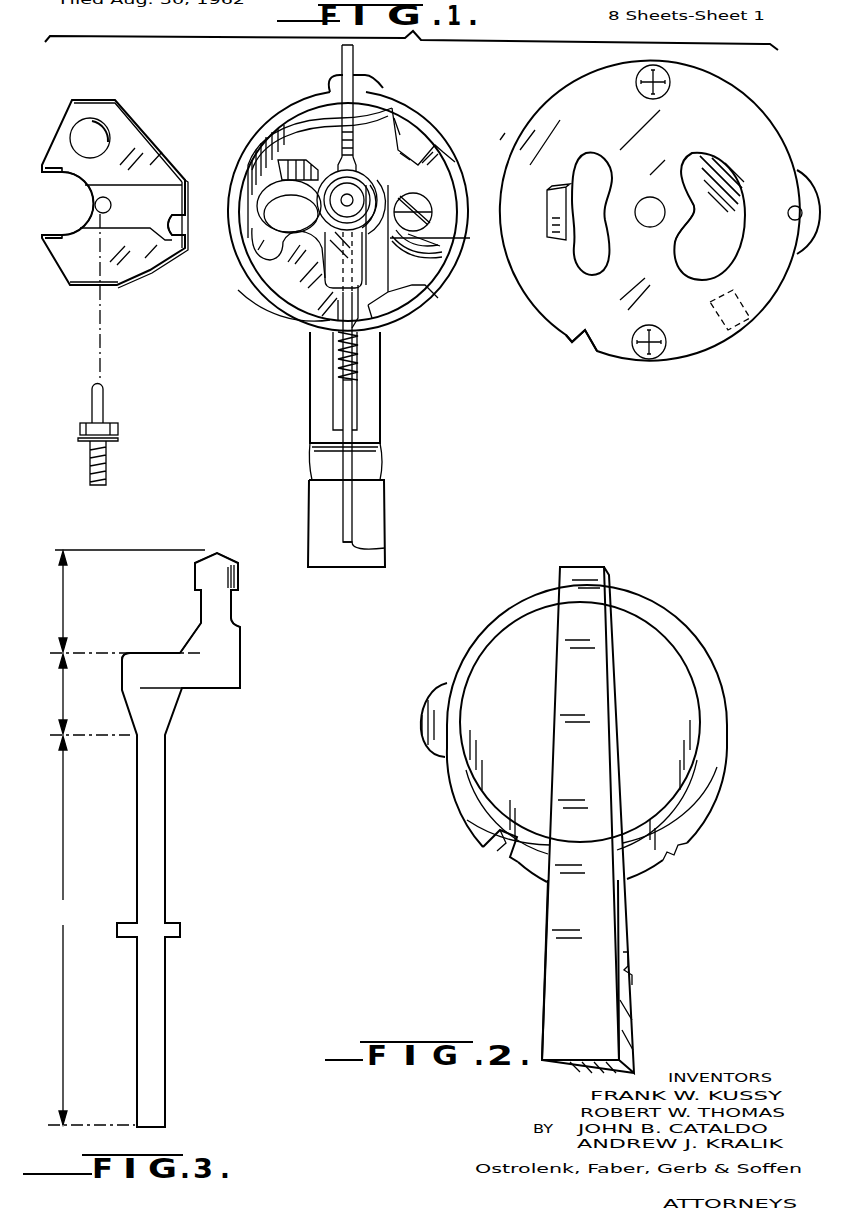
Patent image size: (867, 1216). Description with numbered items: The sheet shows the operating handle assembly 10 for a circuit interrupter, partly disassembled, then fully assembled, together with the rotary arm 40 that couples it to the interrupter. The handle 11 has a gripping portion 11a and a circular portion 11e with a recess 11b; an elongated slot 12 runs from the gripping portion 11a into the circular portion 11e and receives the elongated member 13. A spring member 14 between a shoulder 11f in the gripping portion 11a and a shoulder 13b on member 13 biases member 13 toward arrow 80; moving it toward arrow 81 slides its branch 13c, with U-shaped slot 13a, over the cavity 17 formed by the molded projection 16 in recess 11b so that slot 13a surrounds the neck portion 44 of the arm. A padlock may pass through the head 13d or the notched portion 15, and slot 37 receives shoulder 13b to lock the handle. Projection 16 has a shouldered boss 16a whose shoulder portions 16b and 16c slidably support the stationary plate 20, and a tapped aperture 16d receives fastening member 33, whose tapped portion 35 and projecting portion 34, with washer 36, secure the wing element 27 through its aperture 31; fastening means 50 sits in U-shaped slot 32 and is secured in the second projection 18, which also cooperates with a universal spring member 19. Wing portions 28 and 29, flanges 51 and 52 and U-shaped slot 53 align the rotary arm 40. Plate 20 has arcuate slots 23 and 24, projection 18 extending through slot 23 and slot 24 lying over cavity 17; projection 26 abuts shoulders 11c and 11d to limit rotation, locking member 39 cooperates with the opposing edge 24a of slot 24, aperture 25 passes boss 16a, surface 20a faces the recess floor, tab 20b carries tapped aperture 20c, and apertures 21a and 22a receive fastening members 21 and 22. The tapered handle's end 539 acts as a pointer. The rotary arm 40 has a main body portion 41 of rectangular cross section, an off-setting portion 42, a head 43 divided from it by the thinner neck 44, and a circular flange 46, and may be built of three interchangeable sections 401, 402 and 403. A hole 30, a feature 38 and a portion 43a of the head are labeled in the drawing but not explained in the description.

In FIG. 1, the handle assembly 10 is at (438, 381).
In FIG. 1, the handle 11 is at (425, 86).
In FIG. 2, the handle 11 is at (740, 615).
In FIG. 1, the gripping portion 11a is at (318, 415).
In FIG. 2, the gripping portion 11a is at (548, 958).
In FIG. 1, the recess 11b is at (270, 128).
In FIG. 1, the shoulder 11c is at (410, 150).
In FIG. 1, the shoulder 11d is at (420, 280).
In FIG. 1, the circular portion 11e is at (296, 90).
In FIG. 2, the circular portion 11e is at (640, 606).
In FIG. 1, the shoulder 11f is at (375, 326).
In FIG. 1, the elongated slot 12 is at (355, 545).
In FIG. 1, the elongated member 13 is at (352, 512).
In FIG. 1, the U-shaped slot 13a is at (275, 262).
In FIG. 1, the shoulder 13b is at (343, 383).
In FIG. 1, the extending branch 13c is at (300, 295).
In FIG. 1, the head 13d is at (355, 50).
In FIG. 1, the spring member 14 is at (338, 358).
In FIG. 1, the notched portion 15 is at (376, 458).
In FIG. 2, the notched portion 15 is at (632, 962).
In FIG. 1, the molded projection 16 is at (252, 172).
In FIG. 1, the shouldered boss 16a is at (328, 214).
In FIG. 1, the shoulder portion 16b is at (352, 232).
In FIG. 1, the shoulder portion 16c is at (378, 192).
In FIG. 1, the tapped aperture 16d is at (332, 165).
In FIG. 1, the cavity 17 is at (265, 205).
In FIG. 1, the second projection 18 is at (455, 240).
In FIG. 1, the universal spring member 19 is at (432, 232).
In FIG. 1, the stationary plate 20 is at (614, 374).
In FIG. 1, the surface 20a is at (700, 128).
In FIG. 1, the tab 20b is at (803, 172).
In FIG. 2, the tab 20b is at (432, 735).
In FIG. 1, the tapped aperture 20c is at (792, 220).
In FIG. 1, the fastening member 21 is at (636, 330).
In FIG. 1, the aperture 21a is at (652, 326).
In FIG. 1, the fastening member 22 is at (636, 85).
In FIG. 1, the aperture 22a is at (670, 90).
In FIG. 1, the arcuate slot 23 is at (588, 158).
In FIG. 1, the arcuate slot 24 is at (720, 268).
In FIG. 1, the opposing edge 24a is at (676, 238).
In FIG. 1, the aperture 25 is at (648, 200).
In FIG. 1, the projection 26 is at (558, 240).
In FIG. 1, the wing member 27 is at (80, 170).
In FIG. 1, the wing portion 28 is at (150, 275).
In FIG. 1, the wing portion 29 is at (132, 133).
In FIG. 1, the hole 30 is at (92, 133).
In FIG. 1, the aperture 31 is at (112, 206).
In FIG. 1, the U-shaped slot 32 is at (182, 220).
In FIG. 1, the fastening member 33 is at (124, 429).
In FIG. 1, the projecting portion 34 is at (103, 398).
In FIG. 1, the tapped portion 35 is at (90, 467).
In FIG. 1, the washer 36 is at (78, 434).
In FIG. 1, the slot 37 is at (570, 322).
In FIG. 2, the slot 37 is at (503, 860).
In FIG. 2, the tab 38 is at (668, 865).
In FIG. 1, the locking member 39 is at (730, 190).
In FIG. 3, the rotary arm 40 is at (190, 794).
In FIG. 3, the main body portion 41 is at (165, 858).
In FIG. 3, the off-setting portion 42 is at (200, 690).
In FIG. 3, the head 43 is at (194, 568).
In FIG. 3, the neck 43a is at (199, 596).
In FIG. 3, the neck portion 44 is at (200, 612).
In FIG. 3, the circular flange 46 is at (182, 930).
In FIG. 1, the fastening means 50 is at (416, 200).
In FIG. 1, the flange 51 is at (45, 170).
In FIG. 1, the flange 52 is at (45, 240).
In FIG. 1, the U-shaped slot 53 is at (62, 214).
In FIG. 1, the arrow 80 is at (372, 590).
In FIG. 1, the arrow 81 is at (334, 582).
In FIG. 3, the section 401 is at (130, 601).
In FIG. 3, the section 402 is at (125, 693).
In FIG. 3, the section 403 is at (91, 930).
In FIG. 2, the end 539 is at (578, 566).